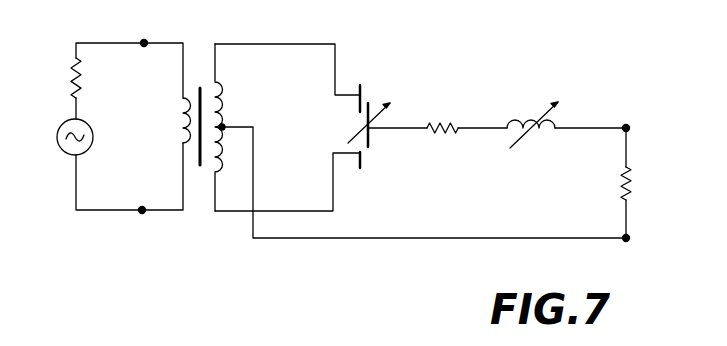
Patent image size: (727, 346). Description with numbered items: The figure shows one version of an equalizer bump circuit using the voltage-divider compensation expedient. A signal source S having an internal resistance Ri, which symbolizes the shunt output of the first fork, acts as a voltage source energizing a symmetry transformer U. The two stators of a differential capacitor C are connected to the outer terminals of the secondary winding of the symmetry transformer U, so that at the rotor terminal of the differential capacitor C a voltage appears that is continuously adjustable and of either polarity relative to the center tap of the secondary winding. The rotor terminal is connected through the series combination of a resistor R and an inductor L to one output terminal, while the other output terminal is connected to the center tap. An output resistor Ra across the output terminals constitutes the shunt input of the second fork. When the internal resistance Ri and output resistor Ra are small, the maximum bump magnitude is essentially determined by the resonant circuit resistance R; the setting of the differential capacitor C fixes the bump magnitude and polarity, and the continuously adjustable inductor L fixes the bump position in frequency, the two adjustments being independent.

The internal resistance Ri is at (86, 78).
The signal source S is at (83, 137).
The symmetry transformer U is at (204, 118).
The differential capacitor C is at (369, 119).
The resistor R is at (442, 116).
The inductor L is at (532, 118).
The output resistor Ra is at (642, 183).